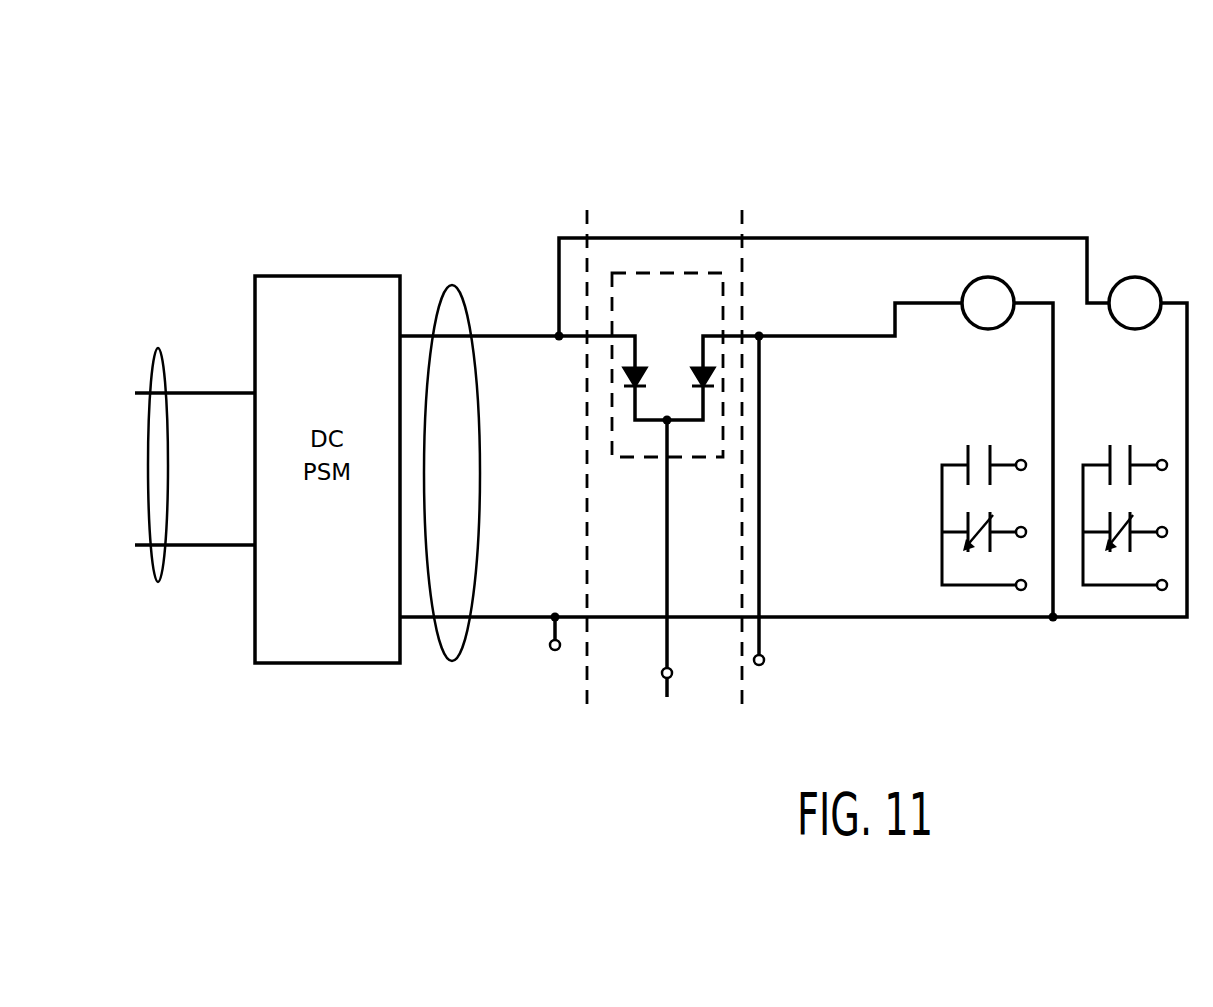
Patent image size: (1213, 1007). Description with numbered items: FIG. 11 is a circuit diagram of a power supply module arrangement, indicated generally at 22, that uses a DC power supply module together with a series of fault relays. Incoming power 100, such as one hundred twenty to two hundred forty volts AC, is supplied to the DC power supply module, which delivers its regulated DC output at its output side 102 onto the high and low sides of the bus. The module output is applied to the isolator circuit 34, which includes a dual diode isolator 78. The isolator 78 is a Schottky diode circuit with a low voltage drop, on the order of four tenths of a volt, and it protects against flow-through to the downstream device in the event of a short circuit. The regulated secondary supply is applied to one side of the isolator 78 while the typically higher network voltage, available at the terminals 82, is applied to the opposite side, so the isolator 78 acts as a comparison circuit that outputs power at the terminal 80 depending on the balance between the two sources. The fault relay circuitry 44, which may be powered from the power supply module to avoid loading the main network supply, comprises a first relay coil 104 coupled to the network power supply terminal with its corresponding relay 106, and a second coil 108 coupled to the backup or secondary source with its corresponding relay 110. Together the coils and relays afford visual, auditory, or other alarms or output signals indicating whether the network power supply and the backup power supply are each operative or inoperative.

The control system 22 is at (973, 147).
The isolator circuit 34 is at (661, 165).
The fault relay circuitry 44 is at (1114, 196).
The dual diode isolator 78 is at (667, 352).
The terminal 80 is at (666, 699).
The terminals 82 is at (550, 652).
The incoming power 100 is at (148, 463).
The DC output connector 102 is at (480, 472).
The first relay coil 104 is at (967, 283).
The relay 106 is at (873, 531).
The second coil 108 is at (1153, 283).
The relay 110 is at (1119, 418).